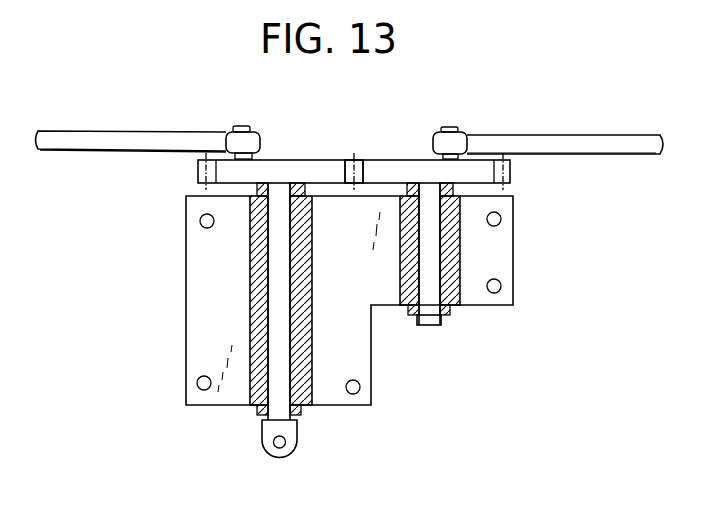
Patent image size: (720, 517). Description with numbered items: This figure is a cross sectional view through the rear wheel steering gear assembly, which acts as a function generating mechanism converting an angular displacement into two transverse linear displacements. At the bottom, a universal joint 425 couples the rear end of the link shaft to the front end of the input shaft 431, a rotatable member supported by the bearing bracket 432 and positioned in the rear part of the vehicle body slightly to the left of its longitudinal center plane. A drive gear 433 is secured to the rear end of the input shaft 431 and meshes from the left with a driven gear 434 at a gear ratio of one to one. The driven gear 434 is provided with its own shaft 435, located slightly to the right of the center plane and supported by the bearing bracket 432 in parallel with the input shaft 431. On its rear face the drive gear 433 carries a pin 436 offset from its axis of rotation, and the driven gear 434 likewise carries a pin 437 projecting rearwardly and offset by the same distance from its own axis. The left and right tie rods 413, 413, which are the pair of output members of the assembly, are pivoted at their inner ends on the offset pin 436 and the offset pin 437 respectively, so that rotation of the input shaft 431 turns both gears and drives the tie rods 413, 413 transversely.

The tie rod 413 is at (57, 142).
The universal joint 425 is at (285, 460).
The input shaft 431 is at (278, 328).
The bearing bracket 432 is at (358, 353).
The drive gear 433 is at (320, 168).
The driven gear 434 is at (389, 168).
The shaft 435 is at (432, 272).
The pin 436 is at (258, 157).
The pin 437 is at (457, 153).